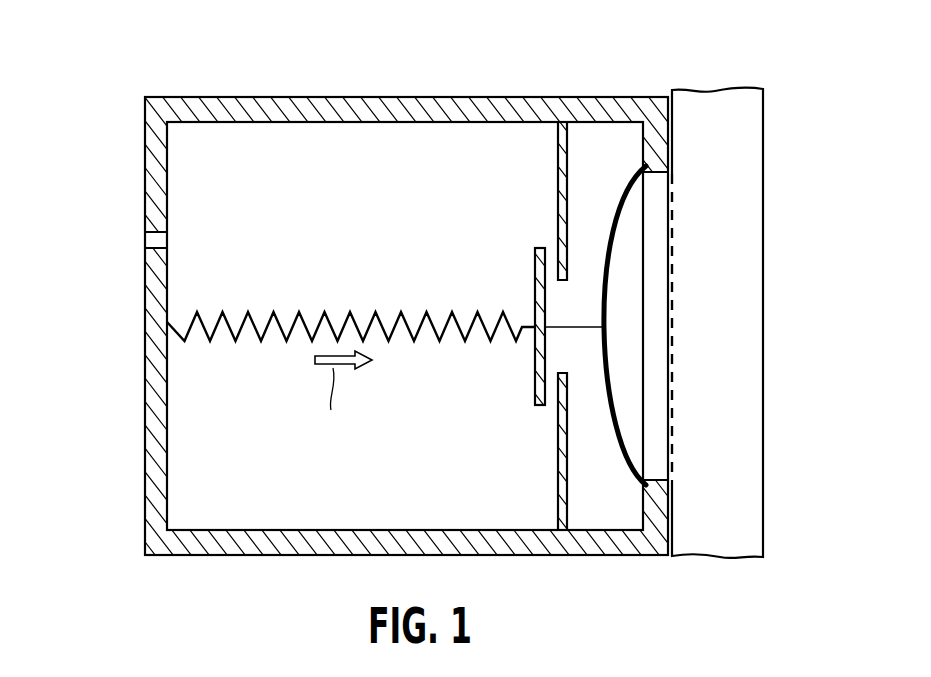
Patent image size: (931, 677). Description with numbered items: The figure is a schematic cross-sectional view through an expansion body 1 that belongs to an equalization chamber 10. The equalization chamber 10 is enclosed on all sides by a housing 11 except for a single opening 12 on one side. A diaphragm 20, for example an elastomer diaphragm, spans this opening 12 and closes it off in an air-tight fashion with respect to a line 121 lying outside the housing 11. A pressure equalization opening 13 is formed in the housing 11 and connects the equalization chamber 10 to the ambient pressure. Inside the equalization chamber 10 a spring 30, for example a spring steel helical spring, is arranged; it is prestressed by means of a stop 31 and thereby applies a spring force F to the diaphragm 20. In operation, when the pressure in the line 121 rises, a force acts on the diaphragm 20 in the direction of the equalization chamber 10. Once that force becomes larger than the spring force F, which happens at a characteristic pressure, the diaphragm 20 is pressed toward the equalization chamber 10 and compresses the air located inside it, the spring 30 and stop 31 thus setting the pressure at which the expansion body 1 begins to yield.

The expansion body 1 is at (93, 123).
The equalization chamber 10 is at (377, 157).
The housing 11 is at (153, 390).
The opening 12 is at (658, 297).
The line 121 is at (738, 328).
The pressure equalization opening 13 is at (147, 240).
The diaphragm 20 is at (617, 213).
The spring 30 is at (333, 312).
The stop 31 is at (522, 382).